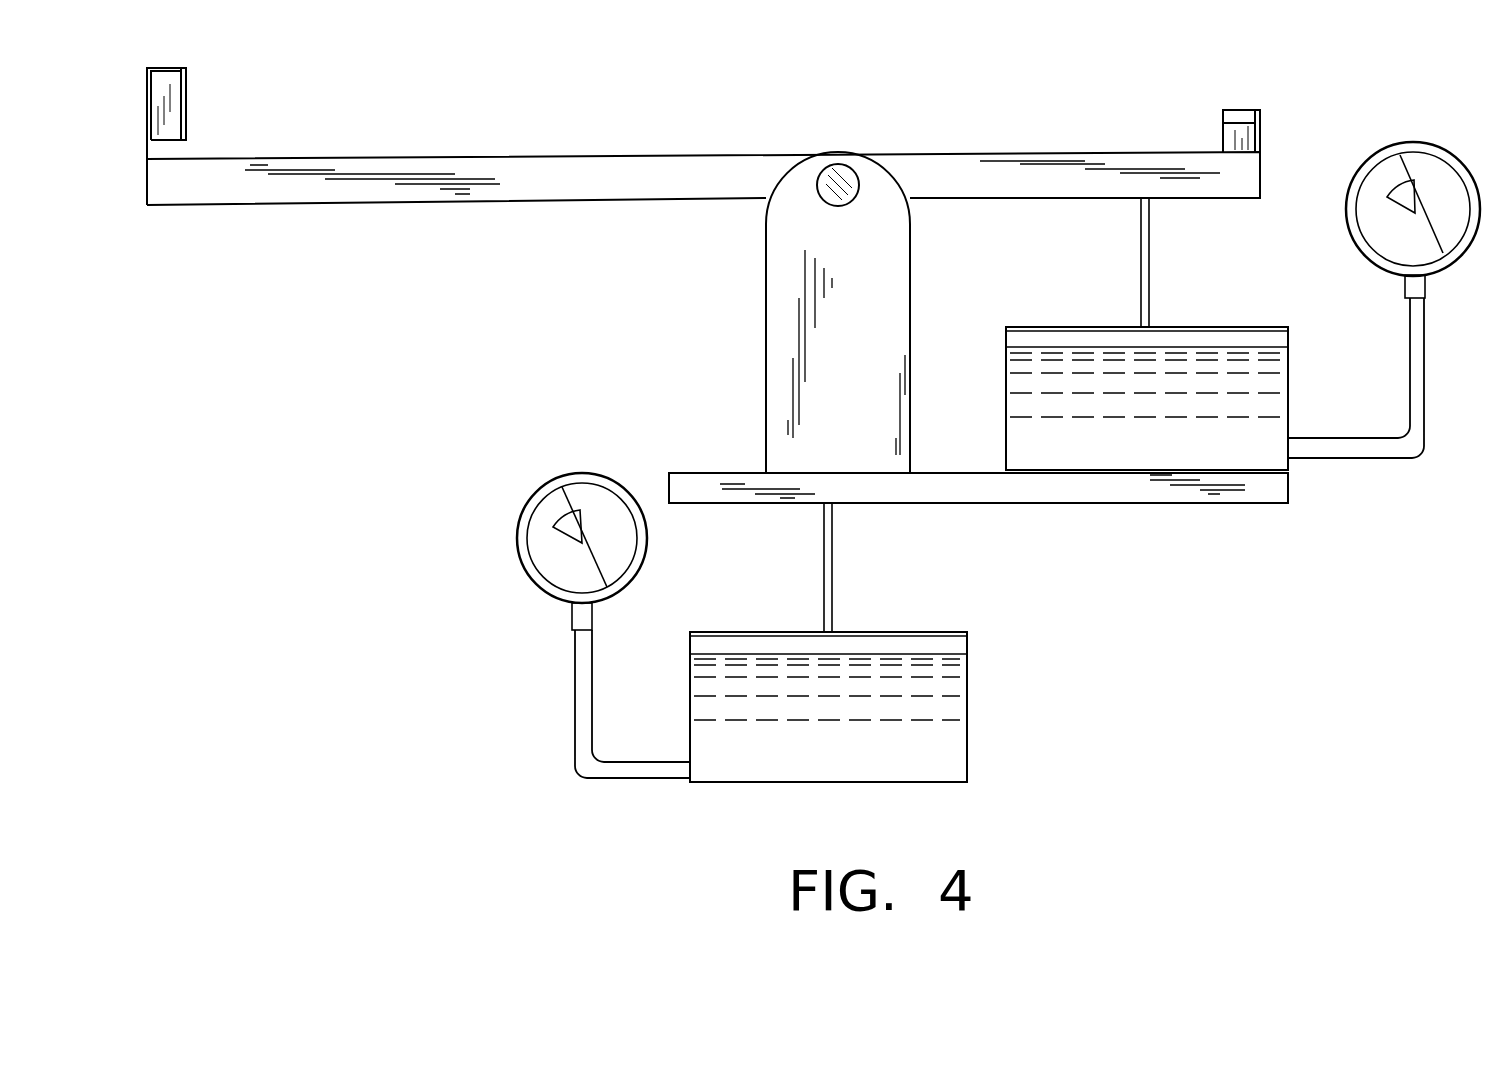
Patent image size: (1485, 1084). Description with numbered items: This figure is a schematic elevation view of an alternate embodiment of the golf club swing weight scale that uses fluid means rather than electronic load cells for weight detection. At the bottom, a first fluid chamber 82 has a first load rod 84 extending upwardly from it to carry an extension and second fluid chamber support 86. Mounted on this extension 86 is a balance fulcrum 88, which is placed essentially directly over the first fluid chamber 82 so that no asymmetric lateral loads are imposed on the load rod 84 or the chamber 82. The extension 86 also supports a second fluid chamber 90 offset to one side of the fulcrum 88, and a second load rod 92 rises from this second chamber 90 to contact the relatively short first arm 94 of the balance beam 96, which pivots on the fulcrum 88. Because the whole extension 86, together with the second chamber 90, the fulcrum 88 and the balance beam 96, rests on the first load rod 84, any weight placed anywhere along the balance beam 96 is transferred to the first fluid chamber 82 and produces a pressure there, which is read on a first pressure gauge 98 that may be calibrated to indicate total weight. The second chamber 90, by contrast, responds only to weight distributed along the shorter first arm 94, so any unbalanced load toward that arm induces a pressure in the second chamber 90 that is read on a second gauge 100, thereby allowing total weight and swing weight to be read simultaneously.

The first fluid chamber 82 is at (968, 735).
The first load rod 84 is at (837, 571).
The extension and second fluid chamber support 86 is at (1010, 507).
The balance fulcrum 88 is at (767, 329).
The second fluid chamber 90 is at (1050, 327).
The second load rod 92 is at (1150, 262).
The first arm 94 is at (1048, 152).
The balance beam 96 is at (788, 152).
The first pressure gauge 98 is at (540, 485).
The second gauge 100 is at (1390, 145).